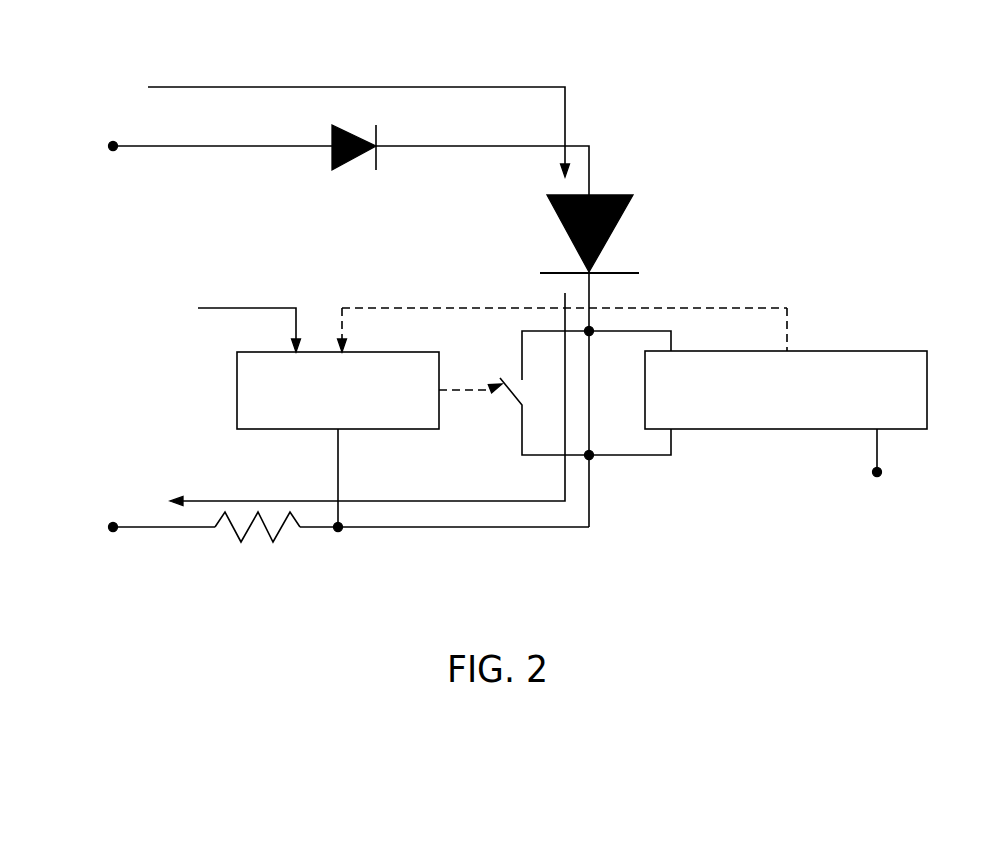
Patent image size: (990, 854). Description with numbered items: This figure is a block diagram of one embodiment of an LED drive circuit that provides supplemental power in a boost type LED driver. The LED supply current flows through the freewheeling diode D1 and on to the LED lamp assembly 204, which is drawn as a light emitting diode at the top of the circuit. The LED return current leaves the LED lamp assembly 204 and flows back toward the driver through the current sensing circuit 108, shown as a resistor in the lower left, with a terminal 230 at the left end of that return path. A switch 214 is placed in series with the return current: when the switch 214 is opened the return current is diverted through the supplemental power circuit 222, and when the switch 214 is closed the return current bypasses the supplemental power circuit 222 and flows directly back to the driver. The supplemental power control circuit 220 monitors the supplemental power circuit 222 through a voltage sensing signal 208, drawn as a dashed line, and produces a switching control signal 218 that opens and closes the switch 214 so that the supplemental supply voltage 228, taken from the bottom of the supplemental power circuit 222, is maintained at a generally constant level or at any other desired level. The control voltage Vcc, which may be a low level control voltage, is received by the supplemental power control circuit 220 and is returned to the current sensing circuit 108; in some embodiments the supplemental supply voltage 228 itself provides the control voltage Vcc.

The freewheeling diode D1 is at (350, 172).
The LED lamp assembly 204 is at (608, 185).
The voltage sensing signal 208 is at (410, 300).
The control voltage Vcc is at (228, 300).
The supplemental power control circuit 220 is at (235, 393).
The switching control signal 218 is at (468, 388).
The switch 214 is at (512, 398).
The supplemental power circuit 222 is at (848, 350).
The supplemental supply voltage 228 is at (880, 485).
The terminal 230 is at (135, 532).
The current sensing circuit 108 is at (257, 535).